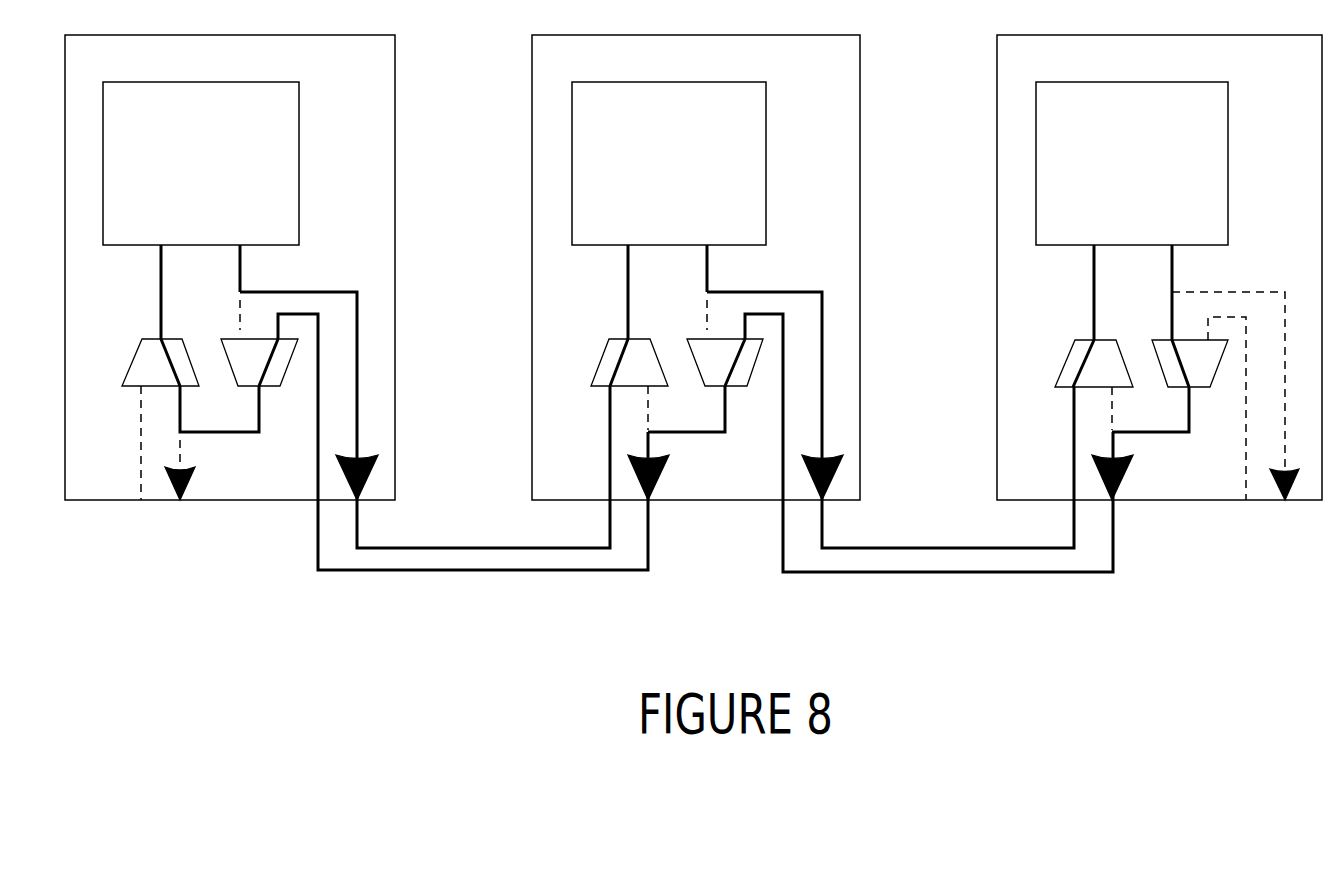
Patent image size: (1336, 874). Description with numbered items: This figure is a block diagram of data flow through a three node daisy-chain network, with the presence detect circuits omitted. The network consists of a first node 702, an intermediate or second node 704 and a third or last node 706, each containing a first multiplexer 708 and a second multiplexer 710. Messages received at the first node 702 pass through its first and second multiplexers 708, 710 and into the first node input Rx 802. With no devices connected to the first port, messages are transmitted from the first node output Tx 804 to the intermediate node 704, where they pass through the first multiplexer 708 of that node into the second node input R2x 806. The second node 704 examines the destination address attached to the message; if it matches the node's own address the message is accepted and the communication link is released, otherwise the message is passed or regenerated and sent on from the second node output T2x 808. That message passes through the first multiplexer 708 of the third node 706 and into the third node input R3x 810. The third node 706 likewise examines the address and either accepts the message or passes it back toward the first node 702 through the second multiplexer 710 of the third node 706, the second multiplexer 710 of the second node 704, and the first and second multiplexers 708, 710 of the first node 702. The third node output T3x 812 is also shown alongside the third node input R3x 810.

The first node 702 is at (307, 163).
The intermediate node 704 is at (768, 163).
The third node 706 is at (1233, 163).
The first multiplexer 708 is at (152, 337).
The second multiplexer 710 is at (282, 388).
The first node input Rx 802 is at (156, 264).
The first node output Tx 804 is at (264, 259).
The second node input R2x 806 is at (628, 264).
The second node output T2x 808 is at (730, 259).
The third node input R3x 810 is at (1094, 264).
The third node output T3x 812 is at (1194, 264).